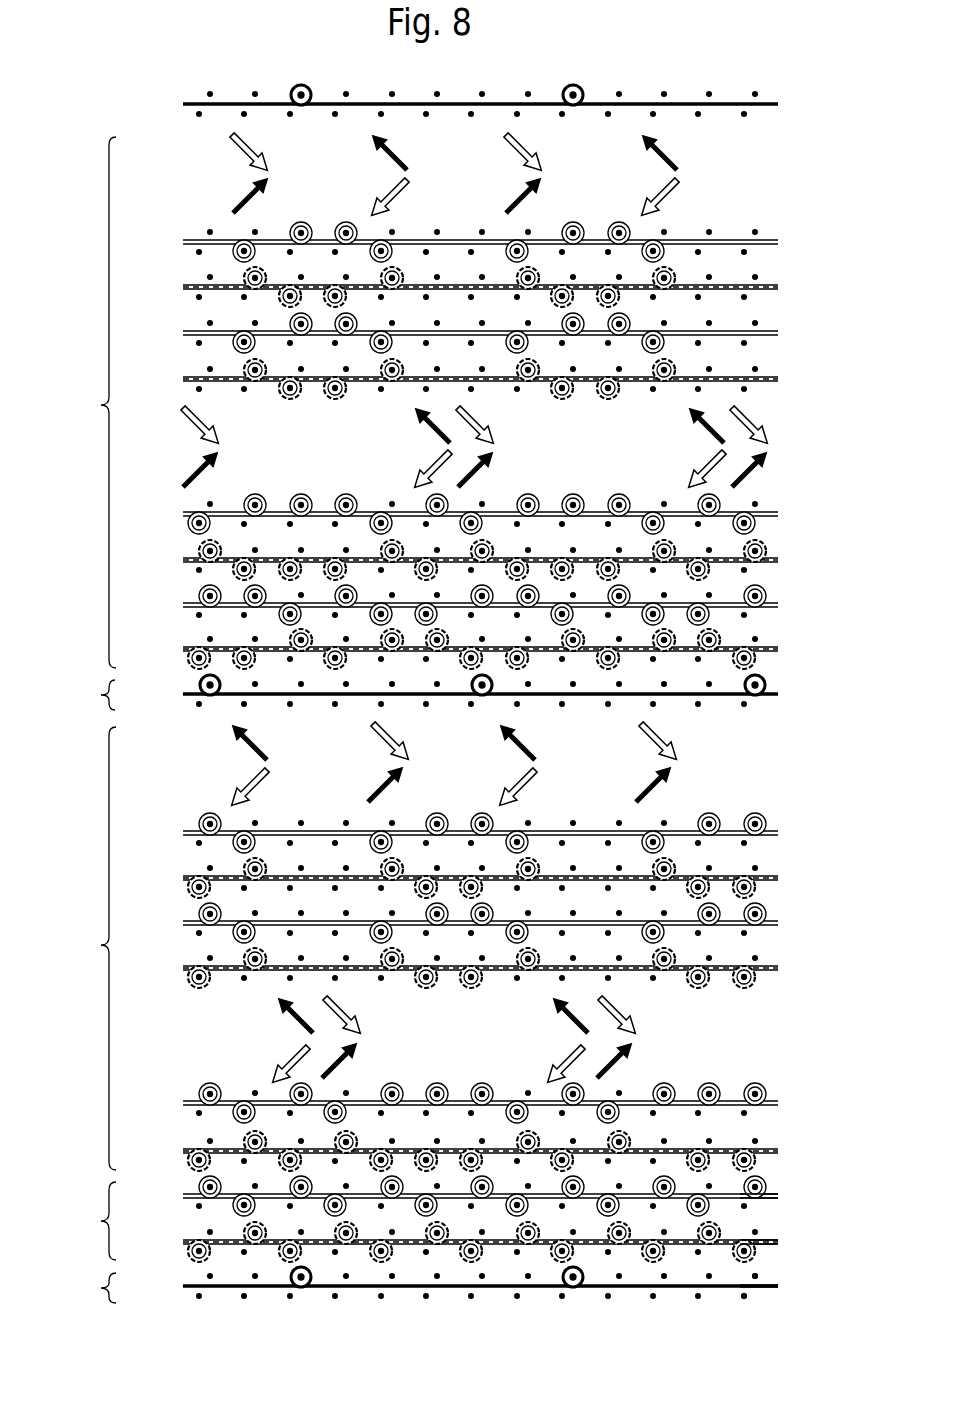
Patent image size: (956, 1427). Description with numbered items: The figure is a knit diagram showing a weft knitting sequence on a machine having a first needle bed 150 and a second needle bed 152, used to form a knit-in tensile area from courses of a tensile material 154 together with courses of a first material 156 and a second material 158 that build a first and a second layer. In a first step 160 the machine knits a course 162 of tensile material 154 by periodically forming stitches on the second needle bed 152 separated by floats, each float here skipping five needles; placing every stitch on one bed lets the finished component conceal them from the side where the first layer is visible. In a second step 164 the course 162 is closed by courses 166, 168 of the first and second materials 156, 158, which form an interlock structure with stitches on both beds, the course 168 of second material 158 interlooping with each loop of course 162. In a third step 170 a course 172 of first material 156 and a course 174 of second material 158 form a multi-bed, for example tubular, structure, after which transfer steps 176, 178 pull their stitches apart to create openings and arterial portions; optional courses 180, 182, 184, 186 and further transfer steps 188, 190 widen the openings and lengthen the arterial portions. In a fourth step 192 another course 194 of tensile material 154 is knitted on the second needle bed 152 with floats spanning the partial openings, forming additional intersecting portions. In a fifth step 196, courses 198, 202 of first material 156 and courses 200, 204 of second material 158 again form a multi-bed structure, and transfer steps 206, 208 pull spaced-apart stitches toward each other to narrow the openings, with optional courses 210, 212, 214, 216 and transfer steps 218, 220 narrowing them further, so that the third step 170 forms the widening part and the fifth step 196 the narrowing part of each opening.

The first needle bed 150 is at (745, 1297).
The second needle bed 152 is at (757, 1277).
The tensile material 154 is at (778, 1287).
The first material 156 is at (768, 1241).
The second material 158 is at (768, 1194).
The first step 160 is at (102, 1288).
The course 162 is at (456, 1283).
The second step 164 is at (102, 1221).
The course 166 is at (456, 1242).
The course 168 is at (456, 1196).
The third step 170 is at (102, 945).
The course 172 is at (456, 1151).
The course 174 is at (456, 1103).
The transfer step 176 is at (386, 1062).
The transfer step 178 is at (388, 1015).
The course 180 is at (456, 968).
The course 182 is at (456, 923).
The course 184 is at (456, 878).
The course 186 is at (456, 833).
The transfer step 188 is at (406, 786).
The transfer step 190 is at (408, 742).
The fourth step 192 is at (102, 695).
The course 194 is at (456, 691).
The fifth step 196 is at (104, 407).
The course 198 is at (456, 649).
The course 200 is at (456, 605).
The course 202 is at (456, 560).
The course 204 is at (456, 514).
The transfer step 206 is at (454, 469).
The transfer step 208 is at (454, 425).
The course 210 is at (456, 379).
The course 212 is at (456, 333).
The course 214 is at (456, 287).
The course 216 is at (456, 242).
The transfer step 218 is at (409, 196).
The transfer step 220 is at (409, 152).